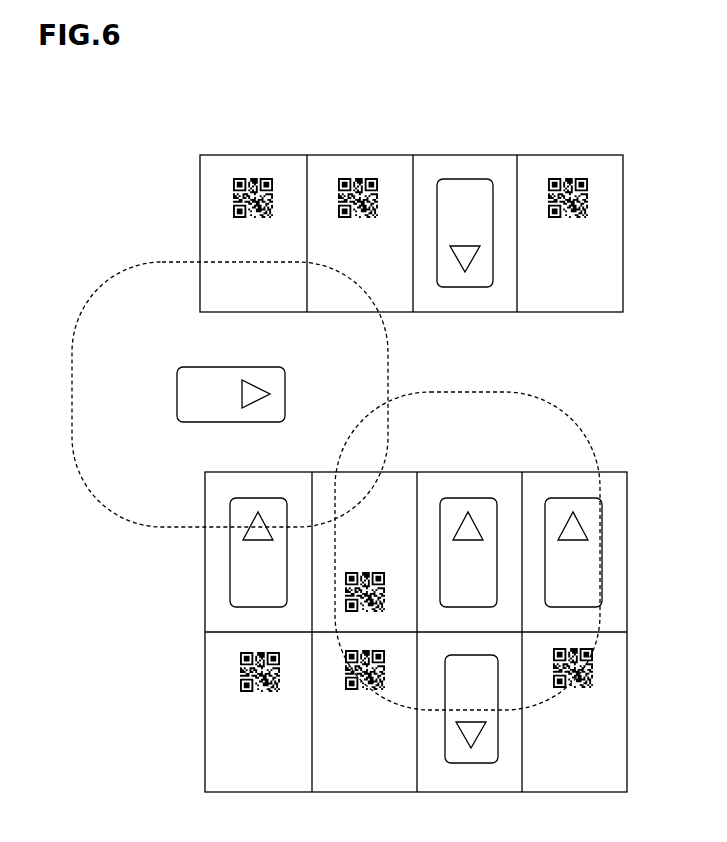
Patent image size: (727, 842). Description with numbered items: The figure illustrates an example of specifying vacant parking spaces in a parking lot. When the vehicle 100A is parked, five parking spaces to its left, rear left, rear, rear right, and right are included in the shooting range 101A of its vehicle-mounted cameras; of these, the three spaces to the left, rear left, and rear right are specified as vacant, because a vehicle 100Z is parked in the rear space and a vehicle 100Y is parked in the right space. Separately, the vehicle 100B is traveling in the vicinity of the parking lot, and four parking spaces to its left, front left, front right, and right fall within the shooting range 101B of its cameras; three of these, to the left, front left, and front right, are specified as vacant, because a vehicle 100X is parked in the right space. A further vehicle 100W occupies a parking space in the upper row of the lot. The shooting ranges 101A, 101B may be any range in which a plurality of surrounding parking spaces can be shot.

The down button 100W is at (465, 179).
The vehicle 100X is at (258, 498).
The vehicle 100A is at (468, 498).
The vehicle 100Y is at (572, 498).
The vehicle 100Z is at (472, 763).
The vehicle 100B is at (177, 392).
The shooting range 101A is at (493, 391).
The shooting range 101B is at (178, 528).